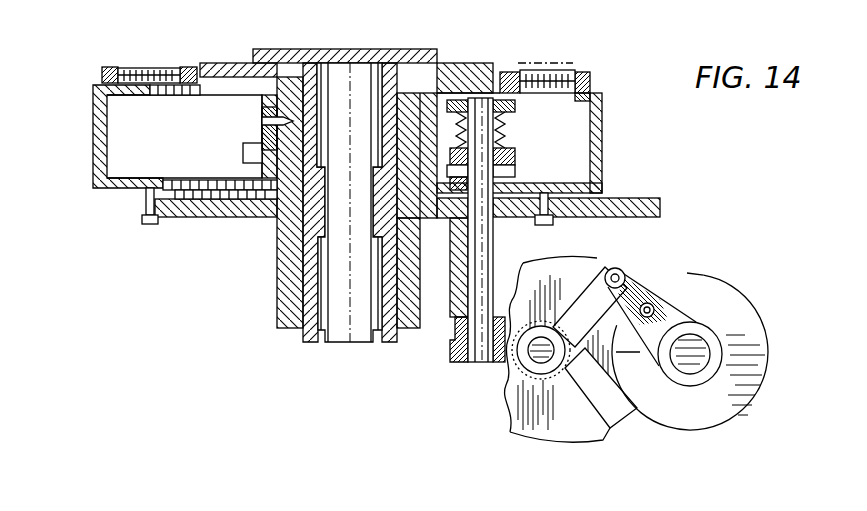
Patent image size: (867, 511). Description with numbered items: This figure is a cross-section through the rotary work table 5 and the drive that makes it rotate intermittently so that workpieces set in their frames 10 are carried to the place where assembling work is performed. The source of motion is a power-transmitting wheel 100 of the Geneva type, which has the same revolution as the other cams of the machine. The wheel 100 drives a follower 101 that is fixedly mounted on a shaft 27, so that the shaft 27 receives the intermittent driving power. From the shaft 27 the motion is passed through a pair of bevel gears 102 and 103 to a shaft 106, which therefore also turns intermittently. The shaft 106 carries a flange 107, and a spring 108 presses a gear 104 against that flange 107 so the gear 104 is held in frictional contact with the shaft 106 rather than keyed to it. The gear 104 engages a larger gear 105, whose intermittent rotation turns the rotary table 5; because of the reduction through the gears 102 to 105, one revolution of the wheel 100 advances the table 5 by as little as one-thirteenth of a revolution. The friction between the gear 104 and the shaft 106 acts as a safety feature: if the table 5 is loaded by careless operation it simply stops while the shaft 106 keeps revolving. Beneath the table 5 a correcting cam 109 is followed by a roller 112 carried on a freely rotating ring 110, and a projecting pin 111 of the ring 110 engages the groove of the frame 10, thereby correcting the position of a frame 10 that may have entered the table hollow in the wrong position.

The rotary work table 5 is at (455, 73).
The frame 10 is at (548, 67).
The shaft 27 is at (540, 362).
The power-transmitting wheel 100 is at (733, 297).
The follower 101 is at (572, 282).
The bevel gear 102 is at (520, 375).
The bevel gear 103 is at (463, 358).
The gear 104 is at (516, 156).
The larger gear 105 is at (246, 150).
The shaft 106 is at (478, 288).
The flange 107 is at (512, 176).
The spring 108 is at (508, 128).
The correcting cam 109 is at (97, 133).
The freely rotating ring 110 is at (143, 72).
The projecting pin 111 is at (140, 69).
The roller 112 is at (153, 93).